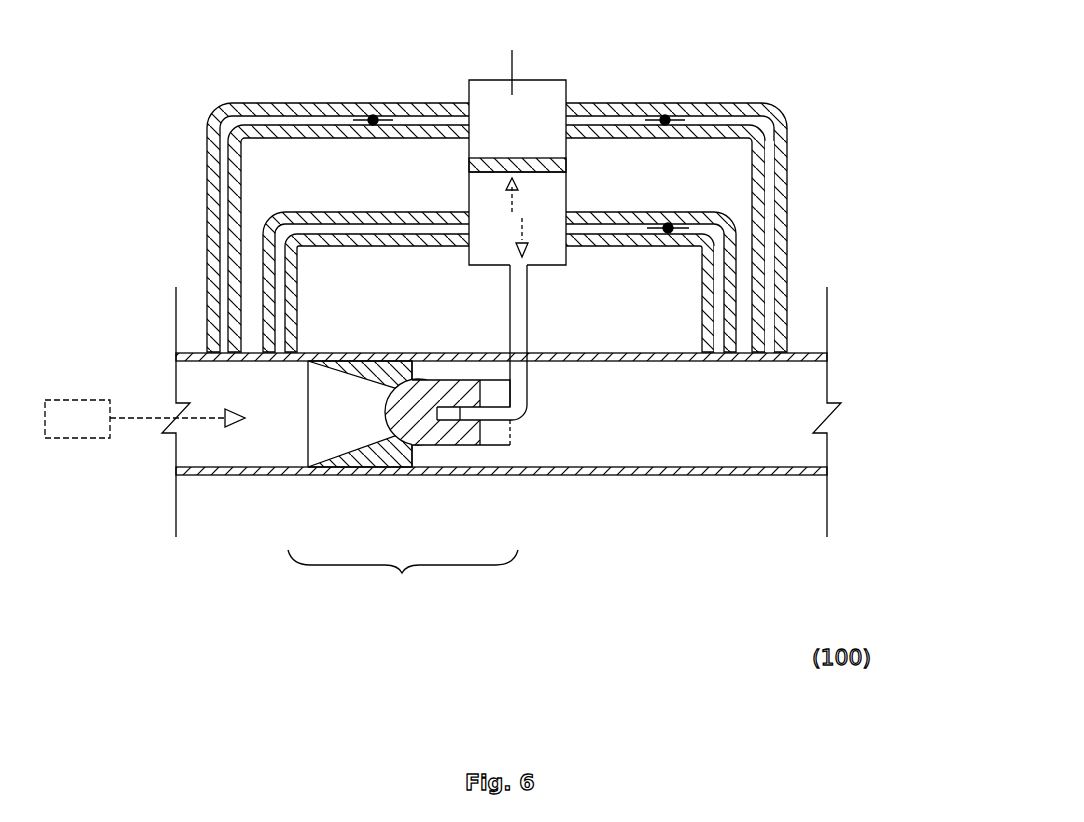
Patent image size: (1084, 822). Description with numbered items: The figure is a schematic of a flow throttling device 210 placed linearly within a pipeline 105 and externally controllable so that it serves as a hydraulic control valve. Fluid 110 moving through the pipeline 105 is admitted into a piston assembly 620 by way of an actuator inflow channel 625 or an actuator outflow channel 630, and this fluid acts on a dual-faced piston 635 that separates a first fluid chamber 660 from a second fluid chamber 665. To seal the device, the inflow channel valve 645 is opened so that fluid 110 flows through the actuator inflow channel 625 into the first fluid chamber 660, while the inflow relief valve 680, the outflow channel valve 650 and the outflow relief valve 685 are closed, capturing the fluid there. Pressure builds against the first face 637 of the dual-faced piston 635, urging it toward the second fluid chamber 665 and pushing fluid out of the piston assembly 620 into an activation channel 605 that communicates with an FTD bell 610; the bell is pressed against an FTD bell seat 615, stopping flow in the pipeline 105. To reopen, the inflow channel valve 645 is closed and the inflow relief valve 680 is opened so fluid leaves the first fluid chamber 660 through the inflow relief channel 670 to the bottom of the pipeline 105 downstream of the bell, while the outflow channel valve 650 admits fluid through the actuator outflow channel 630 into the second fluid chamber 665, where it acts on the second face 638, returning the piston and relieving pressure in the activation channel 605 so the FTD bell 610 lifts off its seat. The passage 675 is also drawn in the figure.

The pipeline 105 is at (640, 476).
The fluid 110 is at (145, 419).
The flow throttling device 210 is at (402, 573).
The activation channel 605 is at (517, 322).
The FTD bell 610 is at (465, 440).
The FTD bell seat 615 is at (390, 436).
The piston assembly 620 is at (547, 23).
The actuator inflow channel 625 is at (221, 117).
The actuator outflow channel 630 is at (282, 278).
The dual-faced piston 635 is at (518, 158).
The first face 637 is at (547, 158).
The second face 638 is at (483, 173).
The inflow channel valve 645 is at (373, 120).
The outflow channel valve 650 is at (386, 241).
The first fluid chamber 660 is at (517, 79).
The second fluid chamber 665 is at (477, 252).
The inflow relief channel 670 is at (768, 248).
The inner annular passage 675 is at (718, 313).
The inflow relief valve 680 is at (665, 120).
The outflow relief valve 685 is at (668, 223).